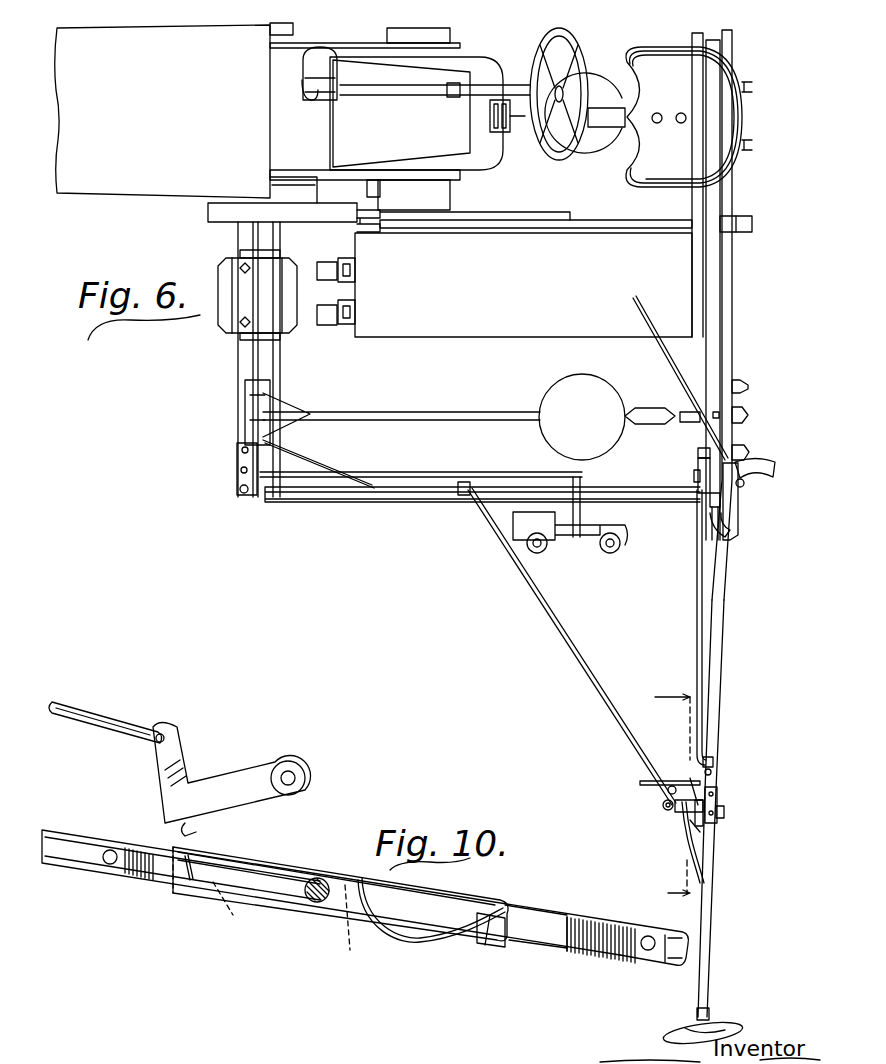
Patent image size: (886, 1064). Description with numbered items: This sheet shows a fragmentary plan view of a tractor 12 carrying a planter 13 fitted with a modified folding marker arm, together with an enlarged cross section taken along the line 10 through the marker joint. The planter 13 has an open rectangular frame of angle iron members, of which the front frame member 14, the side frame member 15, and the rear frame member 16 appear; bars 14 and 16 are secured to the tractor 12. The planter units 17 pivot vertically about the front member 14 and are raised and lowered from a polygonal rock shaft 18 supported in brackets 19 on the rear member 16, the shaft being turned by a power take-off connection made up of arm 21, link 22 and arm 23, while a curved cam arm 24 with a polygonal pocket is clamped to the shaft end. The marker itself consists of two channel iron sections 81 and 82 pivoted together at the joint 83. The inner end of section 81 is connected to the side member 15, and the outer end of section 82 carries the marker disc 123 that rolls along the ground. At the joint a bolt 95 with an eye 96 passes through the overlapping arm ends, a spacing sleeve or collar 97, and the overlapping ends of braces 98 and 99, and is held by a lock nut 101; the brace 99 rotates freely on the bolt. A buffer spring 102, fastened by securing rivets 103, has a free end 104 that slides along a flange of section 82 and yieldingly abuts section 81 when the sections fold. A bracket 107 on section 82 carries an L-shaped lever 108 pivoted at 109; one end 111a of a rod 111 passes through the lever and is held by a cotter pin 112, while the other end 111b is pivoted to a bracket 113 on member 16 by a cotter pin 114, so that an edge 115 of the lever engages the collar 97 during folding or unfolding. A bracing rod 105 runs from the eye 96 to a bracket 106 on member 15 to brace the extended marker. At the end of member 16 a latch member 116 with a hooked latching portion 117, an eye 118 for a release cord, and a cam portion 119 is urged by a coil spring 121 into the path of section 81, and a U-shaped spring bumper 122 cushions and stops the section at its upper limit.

In FIG. 6, the section line 10— 10 is at (667, 795).
In FIG. 6, the tractor 12 is at (112, 196).
In FIG. 6, the planter 13 is at (228, 241).
In FIG. 6, the front frame member 14 is at (242, 358).
In FIG. 6, the side frame member 15 is at (425, 500).
In FIG. 6, the rear frame member 16 is at (716, 318).
In FIG. 6, the planter unit 17 is at (592, 160).
In FIG. 6, the polygonal rock shaft 18 is at (730, 340).
In FIG. 6, the brackets 19 is at (755, 415).
In FIG. 6, the arm 21 is at (358, 224).
In FIG. 6, the link 22 is at (655, 220).
In FIG. 6, the arm 23 is at (752, 224).
In FIG. 6, the curved cam arm 24 is at (776, 468).
In FIG. 6, the marker section 81 is at (720, 670).
In FIG. 10, the marker section 81 is at (82, 866).
In FIG. 6, the marker section 82 is at (712, 930).
In FIG. 10, the marker section 82 is at (570, 942).
In FIG. 6, the pivotal connection 83 is at (727, 811).
In FIG. 10, the pivotal connection 83 is at (316, 902).
In FIG. 6, the bolt 95 is at (722, 815).
In FIG. 6, the eye 96 is at (666, 807).
In FIG. 6, the spacing sleeve or collar 97 is at (690, 812).
In FIG. 6, the brace 98 is at (695, 777).
In FIG. 10, the brace 98 is at (190, 870).
In FIG. 6, the brace 99 is at (685, 850).
In FIG. 10, the brace 99 is at (575, 925).
In FIG. 6, the lock nut 101 is at (720, 800).
In FIG. 10, the buffer spring 102 is at (422, 943).
In FIG. 10, the securing rivets 103 is at (287, 927).
In FIG. 10, the free end 104 is at (500, 925).
In FIG. 6, the bracing rod 105 is at (530, 662).
In FIG. 6, the bracket 106 is at (466, 507).
In FIG. 6, the bracket 107 is at (700, 826).
In FIG. 10, the bracket 107 is at (366, 875).
In FIG. 6, the L-shaped lever 108 is at (672, 783).
In FIG. 10, the L-shaped lever 108 is at (207, 787).
In FIG. 6, the pivot 109 is at (672, 790).
In FIG. 10, the pivot 109 is at (300, 770).
In FIG. 6, the rod 111 is at (697, 633).
In FIG. 10, the rod 111 is at (105, 707).
In FIG. 6, the rod end 111a is at (714, 771).
In FIG. 10, the rod end 111a is at (166, 737).
In FIG. 6, the rod end 111b is at (698, 476).
In FIG. 6, the cotter pin 112 is at (711, 760).
In FIG. 6, the bracket 113 is at (697, 460).
In FIG. 6, the cotter pin 114 is at (705, 449).
In FIG. 10, the lever edge 115 is at (212, 836).
In FIG. 6, the latch member 116 is at (739, 515).
In FIG. 6, the hooked end latching portion 117 is at (715, 528).
In FIG. 6, the eye 118 is at (745, 486).
In FIG. 6, the cam portion 119 is at (726, 528).
In FIG. 6, the coil spring 121 is at (748, 462).
In FIG. 6, the U-shaped spring arm bumper 122 is at (712, 505).
In FIG. 6, the marker disc 123 is at (738, 1020).